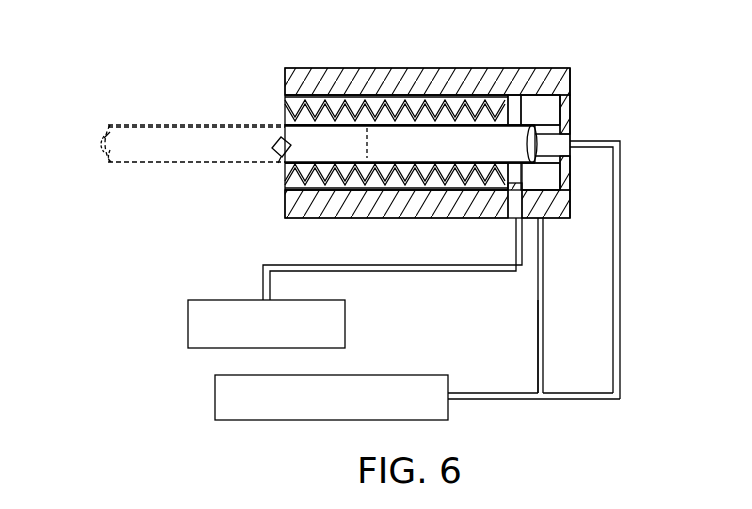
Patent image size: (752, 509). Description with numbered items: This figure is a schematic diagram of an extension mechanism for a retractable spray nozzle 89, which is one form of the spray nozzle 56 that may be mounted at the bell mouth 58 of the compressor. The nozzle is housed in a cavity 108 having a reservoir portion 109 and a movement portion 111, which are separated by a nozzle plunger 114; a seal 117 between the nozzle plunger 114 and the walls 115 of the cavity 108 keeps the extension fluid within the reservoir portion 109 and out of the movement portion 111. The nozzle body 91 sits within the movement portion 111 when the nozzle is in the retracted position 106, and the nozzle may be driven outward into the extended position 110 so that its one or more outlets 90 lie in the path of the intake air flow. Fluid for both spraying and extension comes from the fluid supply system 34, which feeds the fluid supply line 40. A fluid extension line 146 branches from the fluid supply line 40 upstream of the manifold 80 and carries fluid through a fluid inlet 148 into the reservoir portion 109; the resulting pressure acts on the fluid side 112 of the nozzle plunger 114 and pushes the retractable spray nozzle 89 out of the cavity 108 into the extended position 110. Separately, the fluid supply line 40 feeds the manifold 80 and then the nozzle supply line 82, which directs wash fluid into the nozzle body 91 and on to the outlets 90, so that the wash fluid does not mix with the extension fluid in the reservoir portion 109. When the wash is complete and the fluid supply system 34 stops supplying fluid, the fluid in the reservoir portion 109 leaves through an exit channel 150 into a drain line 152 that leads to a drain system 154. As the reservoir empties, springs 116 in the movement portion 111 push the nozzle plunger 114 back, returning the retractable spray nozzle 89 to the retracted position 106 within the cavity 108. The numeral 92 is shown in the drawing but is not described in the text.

The fluid supply system 34 is at (330, 420).
The fluid supply line 40 is at (585, 399).
The spray nozzle 56 is at (162, 125).
The bell mouth 58 is at (322, 182).
The manifold 80 is at (620, 272).
The nozzle supply line 82 is at (565, 138).
The retractable spray nozzle 89 is at (320, 117).
The outlets 90 is at (100, 152).
The nozzle body 91 is at (443, 145).
The tip 92 is at (105, 138).
The retracted position 106 is at (430, 115).
The cavity 108 is at (423, 100).
The reservoir portion 109 is at (528, 110).
The extended position 110 is at (186, 122).
The movement portion 111 is at (448, 118).
The fluid side 112 is at (558, 95).
The nozzle plunger 114 is at (514, 218).
The walls 115 is at (490, 98).
The springs 116 is at (322, 218).
The seal 117 is at (515, 96).
The fluid extension line 146 is at (538, 343).
The fluid inlet 148 is at (560, 195).
The exit channel 150 is at (536, 180).
The drain line 152 is at (395, 272).
The drain system 154 is at (240, 300).